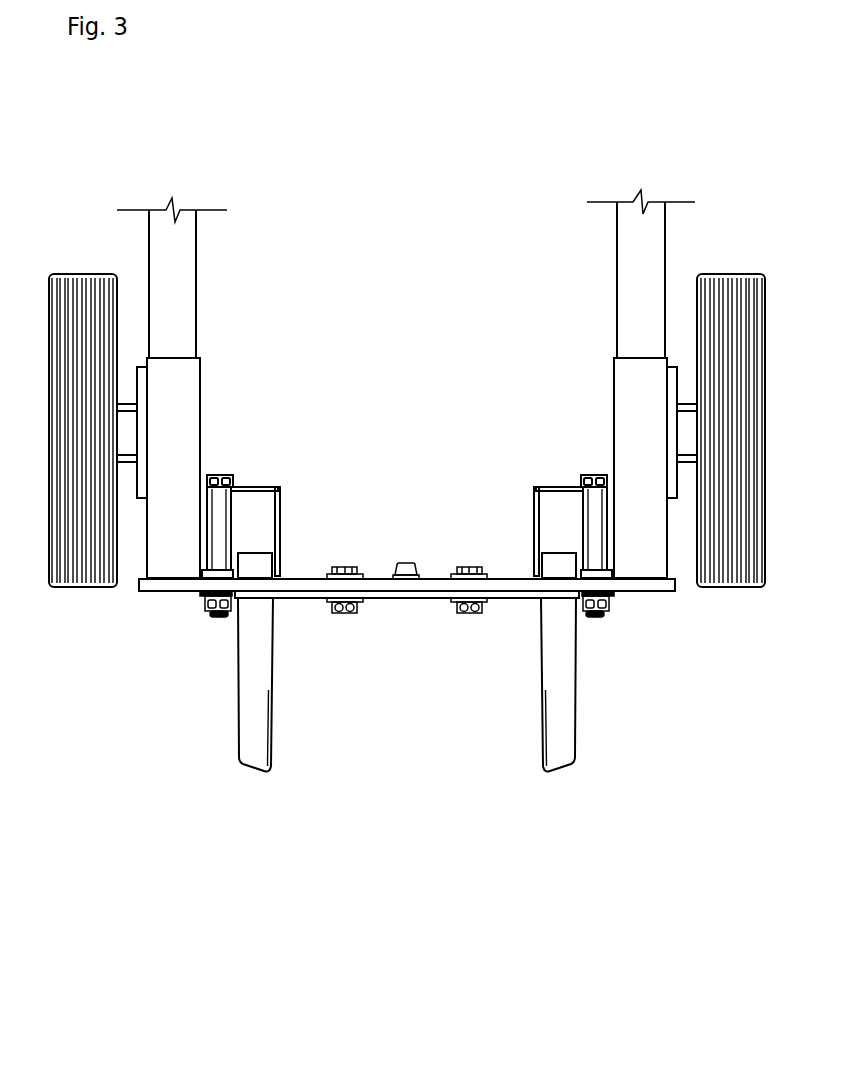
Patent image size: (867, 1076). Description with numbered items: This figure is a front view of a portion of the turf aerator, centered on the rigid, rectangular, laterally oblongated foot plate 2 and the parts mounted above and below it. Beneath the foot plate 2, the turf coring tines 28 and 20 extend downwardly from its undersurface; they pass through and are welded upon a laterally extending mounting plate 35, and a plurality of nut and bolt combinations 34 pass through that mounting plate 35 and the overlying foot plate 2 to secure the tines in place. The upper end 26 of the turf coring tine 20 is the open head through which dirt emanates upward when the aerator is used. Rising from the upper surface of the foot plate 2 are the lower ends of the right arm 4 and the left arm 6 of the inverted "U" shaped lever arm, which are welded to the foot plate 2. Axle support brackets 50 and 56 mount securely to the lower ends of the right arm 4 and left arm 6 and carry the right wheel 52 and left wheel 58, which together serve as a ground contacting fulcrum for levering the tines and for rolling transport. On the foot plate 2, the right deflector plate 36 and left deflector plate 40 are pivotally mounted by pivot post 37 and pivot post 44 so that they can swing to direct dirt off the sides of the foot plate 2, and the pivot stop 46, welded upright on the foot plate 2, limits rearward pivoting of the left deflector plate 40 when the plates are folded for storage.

The foot plate 2 is at (173, 585).
The right arm 4 is at (182, 282).
The left arm 6 is at (635, 280).
The turf coring tine 20 is at (250, 708).
The upper end 26 is at (255, 552).
The turf coring tine 28 is at (562, 715).
The nut and bolt combinations 34 is at (345, 613).
The mounting plate 35 is at (310, 593).
The right deflector plate 36 is at (277, 487).
The pivot post 37 is at (220, 477).
The left deflector plate 40 is at (543, 487).
The pivot post 44 is at (602, 615).
The pivot stop 46 is at (405, 563).
The axle support bracket 50 is at (182, 390).
The right wheel 52 is at (63, 272).
The axle support bracket 56 is at (632, 392).
The left wheel 58 is at (735, 274).